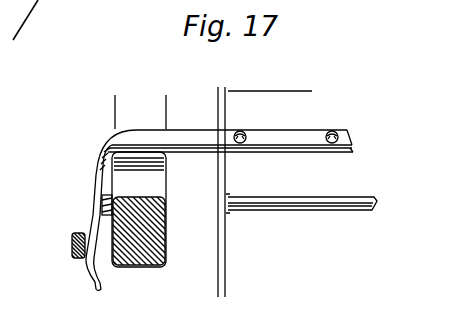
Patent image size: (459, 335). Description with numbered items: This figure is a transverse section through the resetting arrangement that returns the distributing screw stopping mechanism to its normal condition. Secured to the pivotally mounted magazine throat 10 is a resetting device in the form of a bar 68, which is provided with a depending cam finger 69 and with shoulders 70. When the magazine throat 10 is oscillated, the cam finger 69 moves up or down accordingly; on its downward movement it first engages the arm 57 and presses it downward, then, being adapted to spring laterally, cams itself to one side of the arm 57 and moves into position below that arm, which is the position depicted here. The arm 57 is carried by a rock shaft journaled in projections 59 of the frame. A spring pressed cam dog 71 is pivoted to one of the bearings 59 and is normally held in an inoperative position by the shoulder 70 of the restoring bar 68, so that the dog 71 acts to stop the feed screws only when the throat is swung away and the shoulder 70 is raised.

The bar 68 is at (186, 134).
The shoulders 70 is at (103, 190).
The cam finger 69 is at (90, 222).
The cam dog 71 is at (110, 199).
The projections 59 is at (160, 194).
The arm 57 is at (72, 244).
The magazine throat 10 is at (301, 192).